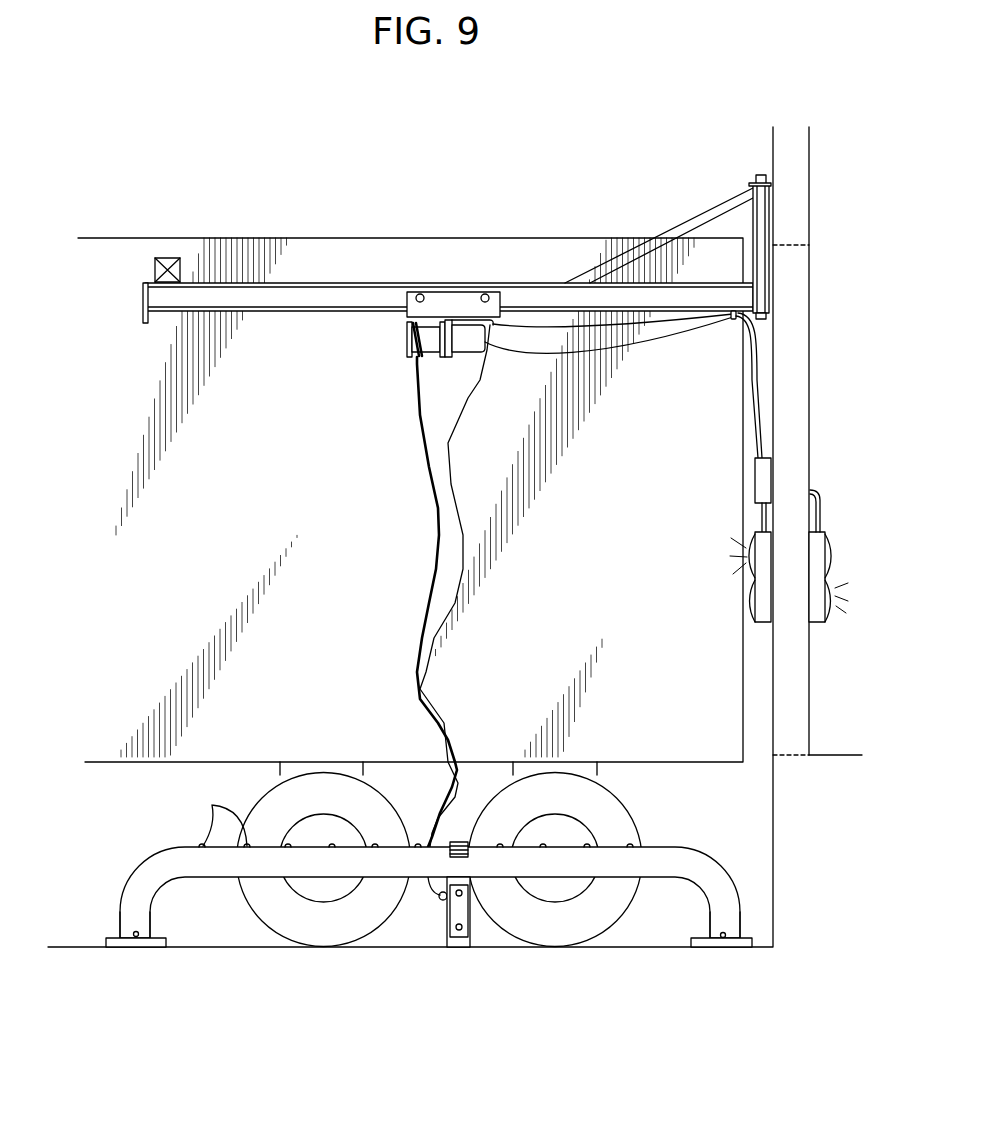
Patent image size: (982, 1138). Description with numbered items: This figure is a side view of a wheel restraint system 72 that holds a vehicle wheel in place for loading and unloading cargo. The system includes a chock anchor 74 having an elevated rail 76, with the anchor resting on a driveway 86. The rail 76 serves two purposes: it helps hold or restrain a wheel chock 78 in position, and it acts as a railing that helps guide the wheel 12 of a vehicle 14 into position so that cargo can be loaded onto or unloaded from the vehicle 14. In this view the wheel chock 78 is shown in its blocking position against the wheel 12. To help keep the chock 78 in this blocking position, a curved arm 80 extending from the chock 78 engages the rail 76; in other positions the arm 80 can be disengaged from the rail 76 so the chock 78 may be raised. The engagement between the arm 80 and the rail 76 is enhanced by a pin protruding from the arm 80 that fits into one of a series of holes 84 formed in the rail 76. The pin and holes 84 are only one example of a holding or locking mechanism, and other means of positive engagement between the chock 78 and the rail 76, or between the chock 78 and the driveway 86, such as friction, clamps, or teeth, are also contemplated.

The wheel 12 is at (627, 806).
The vehicle 14 is at (358, 238).
The wheel restraint system 72 is at (537, 208).
The chock anchor 74 is at (119, 896).
The rail 76 is at (654, 846).
The wheel chock 78 is at (481, 925).
The curved arm 80 is at (458, 842).
The holes 84 is at (212, 805).
The driveway 86 is at (430, 891).